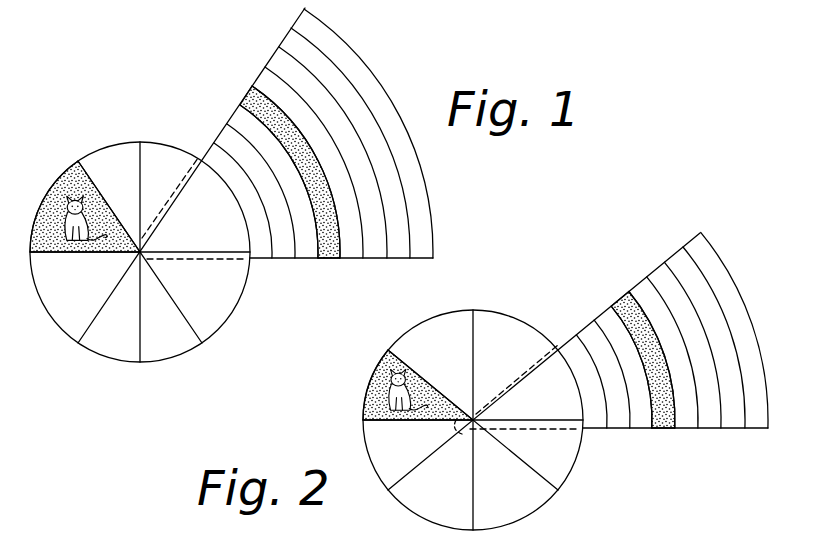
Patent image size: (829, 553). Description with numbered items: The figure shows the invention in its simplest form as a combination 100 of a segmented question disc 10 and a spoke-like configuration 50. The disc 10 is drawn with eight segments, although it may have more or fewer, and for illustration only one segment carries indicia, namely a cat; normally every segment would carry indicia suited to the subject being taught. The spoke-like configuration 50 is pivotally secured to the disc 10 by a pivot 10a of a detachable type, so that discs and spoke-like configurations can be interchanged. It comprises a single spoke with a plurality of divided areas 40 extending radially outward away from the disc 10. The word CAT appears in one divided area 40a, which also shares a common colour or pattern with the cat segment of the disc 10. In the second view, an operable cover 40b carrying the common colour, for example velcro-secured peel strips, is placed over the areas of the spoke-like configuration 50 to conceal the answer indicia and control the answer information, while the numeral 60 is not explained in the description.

In FIG. 1, the combination 100 is at (157, 108).
In FIG. 1, the segmented question disc 10 is at (204, 339).
In FIG. 2, the segmented question disc 10 is at (562, 483).
In FIG. 1, the pivot 10a is at (133, 258).
In FIG. 2, the pivot 10a is at (418, 385).
In FIG. 1, the divided areas 40 is at (214, 143).
In FIG. 2, the divided areas 40 is at (672, 330).
In FIG. 1, the divided area 40a is at (331, 260).
In FIG. 2, the operable cover 40b is at (667, 430).
In FIG. 1, the spoke-like configuration 50 is at (428, 262).
In FIG. 2, the spoke-like configuration 50 is at (525, 490).
In FIG. 2, the pivot axis 60 is at (515, 449).